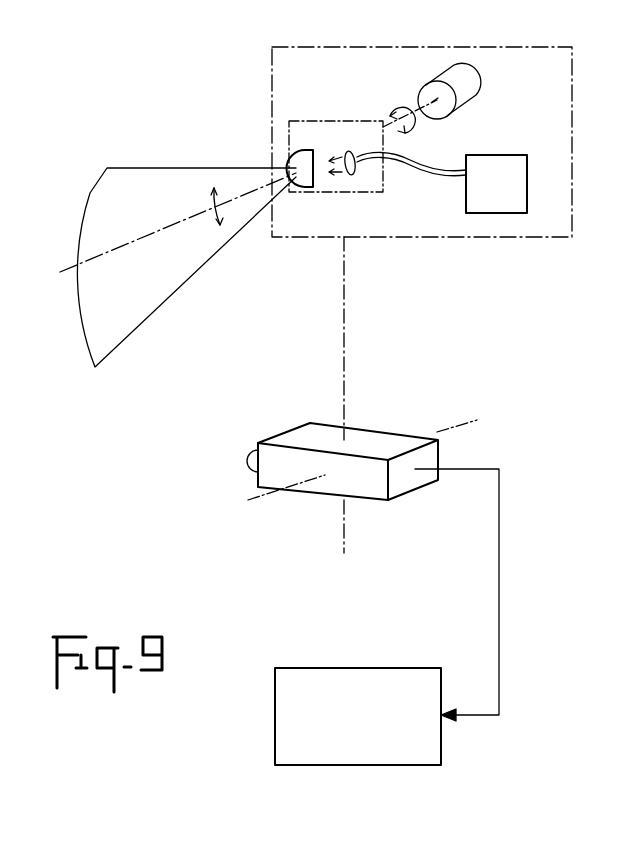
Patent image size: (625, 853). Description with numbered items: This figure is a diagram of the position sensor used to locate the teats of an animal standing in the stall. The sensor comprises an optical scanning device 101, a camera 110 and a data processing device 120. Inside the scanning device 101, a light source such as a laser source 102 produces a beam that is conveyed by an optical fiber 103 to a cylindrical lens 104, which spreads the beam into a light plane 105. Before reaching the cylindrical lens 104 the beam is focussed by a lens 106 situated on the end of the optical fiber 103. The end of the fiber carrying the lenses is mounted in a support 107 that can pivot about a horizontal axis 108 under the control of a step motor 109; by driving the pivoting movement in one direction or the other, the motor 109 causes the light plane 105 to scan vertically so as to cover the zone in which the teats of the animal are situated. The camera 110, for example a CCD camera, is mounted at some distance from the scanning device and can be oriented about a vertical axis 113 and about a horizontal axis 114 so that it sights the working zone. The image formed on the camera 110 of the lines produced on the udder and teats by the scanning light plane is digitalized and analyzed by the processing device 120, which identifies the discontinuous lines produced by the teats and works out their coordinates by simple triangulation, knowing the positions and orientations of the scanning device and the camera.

The optical scanning device 101 is at (423, 47).
The laser source 102 is at (513, 156).
The optical fiber 103 is at (432, 169).
The cylindrical lens 104 is at (297, 158).
The light plane 105 is at (89, 200).
The lens 106 is at (350, 151).
The support 107 is at (355, 194).
The horizontal axis 108 is at (413, 110).
The step motor 109 is at (470, 90).
The camera 110 is at (388, 440).
The vertical axis 113 is at (348, 541).
The horizontal axis 114 is at (271, 493).
The data processing device 120 is at (363, 680).